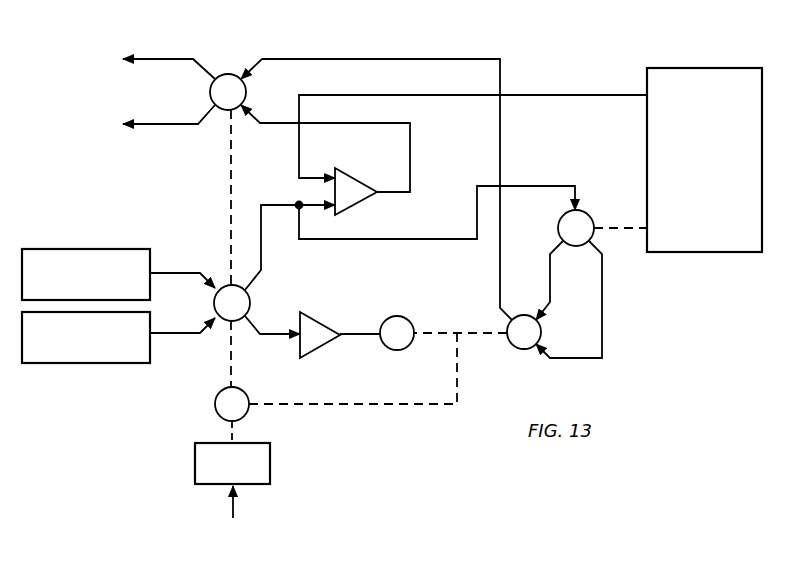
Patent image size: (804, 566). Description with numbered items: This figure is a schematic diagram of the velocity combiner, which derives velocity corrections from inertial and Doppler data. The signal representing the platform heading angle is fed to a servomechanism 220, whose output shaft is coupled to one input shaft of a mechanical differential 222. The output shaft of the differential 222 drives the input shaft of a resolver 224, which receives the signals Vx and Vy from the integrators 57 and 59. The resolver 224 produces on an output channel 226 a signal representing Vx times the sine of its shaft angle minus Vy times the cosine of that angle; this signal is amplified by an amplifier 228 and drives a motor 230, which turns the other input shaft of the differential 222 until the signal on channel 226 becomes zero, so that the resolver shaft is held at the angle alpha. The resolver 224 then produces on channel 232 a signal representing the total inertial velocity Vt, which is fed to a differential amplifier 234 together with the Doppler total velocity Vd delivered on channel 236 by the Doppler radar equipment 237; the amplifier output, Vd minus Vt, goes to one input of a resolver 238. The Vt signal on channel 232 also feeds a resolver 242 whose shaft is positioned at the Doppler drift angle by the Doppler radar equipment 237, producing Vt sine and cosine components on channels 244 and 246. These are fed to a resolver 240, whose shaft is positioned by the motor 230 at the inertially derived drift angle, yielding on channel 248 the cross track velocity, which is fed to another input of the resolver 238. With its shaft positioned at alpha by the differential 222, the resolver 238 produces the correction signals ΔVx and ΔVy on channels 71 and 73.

The integrator 57 is at (135, 253).
The integrator 59 is at (132, 357).
The channel 71 is at (168, 57).
The channel 73 is at (170, 127).
The servomechanism 220 is at (262, 448).
The mechanical differential 222 is at (215, 414).
The resolver 224 is at (247, 299).
The output channel 226 is at (272, 339).
The amplifier 228 is at (322, 344).
The motor 230 is at (408, 314).
The output channel 232 is at (295, 208).
The differential amplifier 234 is at (348, 180).
The channel 236 is at (523, 95).
The Doppler radar equipment 237 is at (743, 72).
The resolver 238 is at (229, 72).
The resolver 240 is at (518, 348).
The resolver 242 is at (584, 211).
The channel 244 is at (550, 277).
The channel 246 is at (603, 284).
The output channel 248 is at (501, 133).